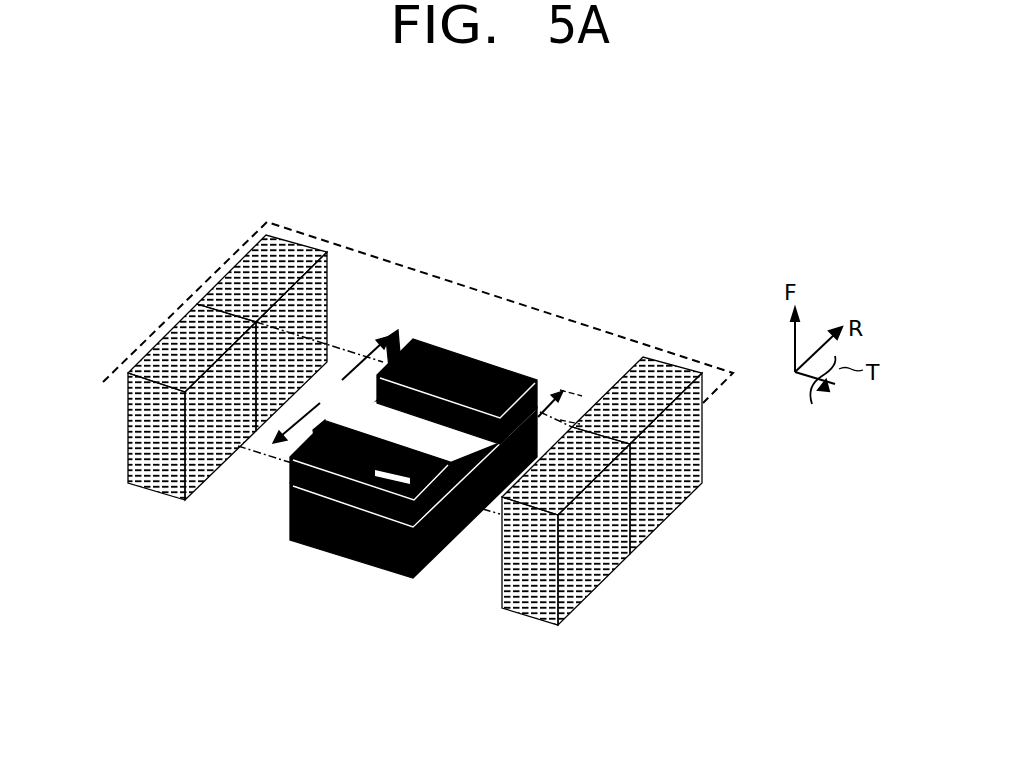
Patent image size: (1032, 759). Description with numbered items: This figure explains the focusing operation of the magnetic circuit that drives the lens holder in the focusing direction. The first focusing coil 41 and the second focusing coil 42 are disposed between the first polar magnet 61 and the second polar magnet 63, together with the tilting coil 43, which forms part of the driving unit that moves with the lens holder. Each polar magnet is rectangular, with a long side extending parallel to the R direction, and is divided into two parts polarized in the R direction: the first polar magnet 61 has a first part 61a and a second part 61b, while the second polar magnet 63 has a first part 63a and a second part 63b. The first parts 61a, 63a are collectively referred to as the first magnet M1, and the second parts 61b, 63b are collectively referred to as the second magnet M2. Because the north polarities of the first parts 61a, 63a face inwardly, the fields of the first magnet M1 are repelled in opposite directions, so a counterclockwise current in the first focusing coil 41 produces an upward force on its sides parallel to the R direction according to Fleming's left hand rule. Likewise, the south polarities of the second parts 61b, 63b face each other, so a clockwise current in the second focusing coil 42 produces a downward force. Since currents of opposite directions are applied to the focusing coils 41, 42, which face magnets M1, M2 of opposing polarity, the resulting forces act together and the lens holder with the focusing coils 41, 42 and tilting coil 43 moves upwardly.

The first focusing coil 41 is at (450, 345).
The second focusing coil 42 is at (292, 466).
The tilting coil 43 is at (377, 567).
The first polar magnet 61 is at (620, 515).
The first part of first polar magnet 61a is at (645, 535).
The second part of first polar magnet 61b is at (605, 578).
The second polar magnet 63 is at (203, 352).
The first part of second polar magnet 63a is at (228, 282).
The second part of second polar magnet 63b is at (178, 330).
The first magnet M1 is at (697, 420).
The second magnet M2 is at (672, 518).